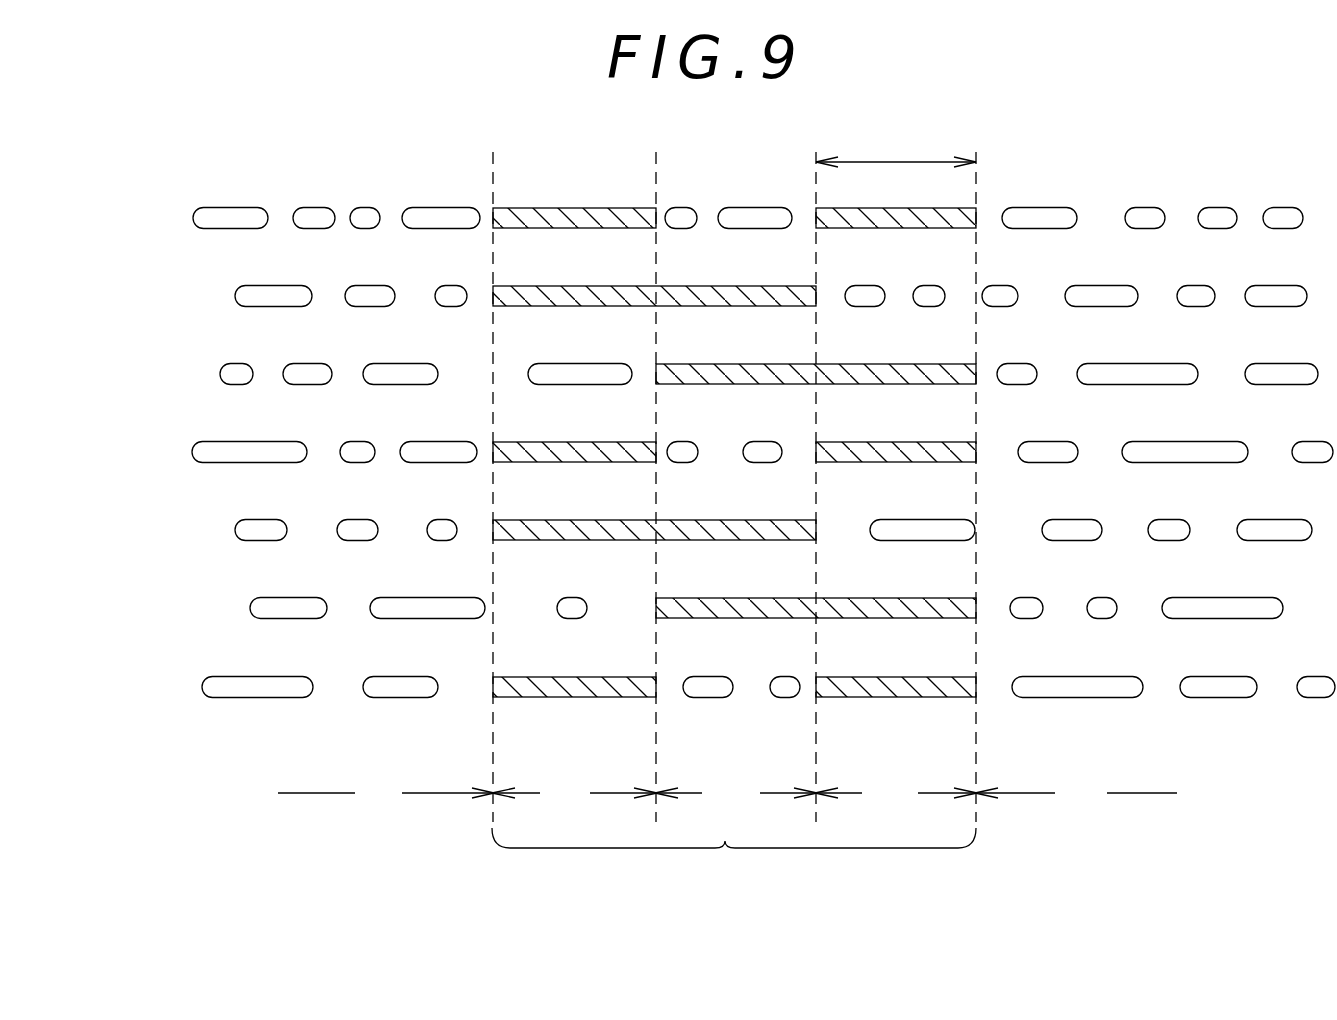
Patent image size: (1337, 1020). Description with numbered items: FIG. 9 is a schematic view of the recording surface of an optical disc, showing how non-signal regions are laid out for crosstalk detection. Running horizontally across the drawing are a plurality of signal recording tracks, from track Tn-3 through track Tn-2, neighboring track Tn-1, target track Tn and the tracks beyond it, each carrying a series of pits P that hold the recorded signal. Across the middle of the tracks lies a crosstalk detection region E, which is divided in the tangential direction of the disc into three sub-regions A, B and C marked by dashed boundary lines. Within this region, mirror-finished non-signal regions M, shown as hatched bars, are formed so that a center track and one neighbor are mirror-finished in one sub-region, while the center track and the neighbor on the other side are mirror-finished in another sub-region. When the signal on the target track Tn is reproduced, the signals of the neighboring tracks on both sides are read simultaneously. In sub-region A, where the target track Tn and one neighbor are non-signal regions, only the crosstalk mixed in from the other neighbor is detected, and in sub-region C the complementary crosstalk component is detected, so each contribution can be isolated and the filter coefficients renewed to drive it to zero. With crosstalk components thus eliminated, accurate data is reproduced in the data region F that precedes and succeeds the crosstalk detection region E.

The pit P is at (1170, 208).
The non-signal region M is at (896, 152).
The sub-region A is at (574, 794).
The sub-region B is at (736, 794).
The sub-region C is at (896, 794).
The crosstalk detection region E is at (734, 860).
The data region F is at (727, 794).
The signal recording track Tn-3 is at (190, 218).
The signal recording track Tn-2 is at (230, 296).
The neighboring track Tn-1 is at (215, 374).
The target track Tn is at (190, 452).